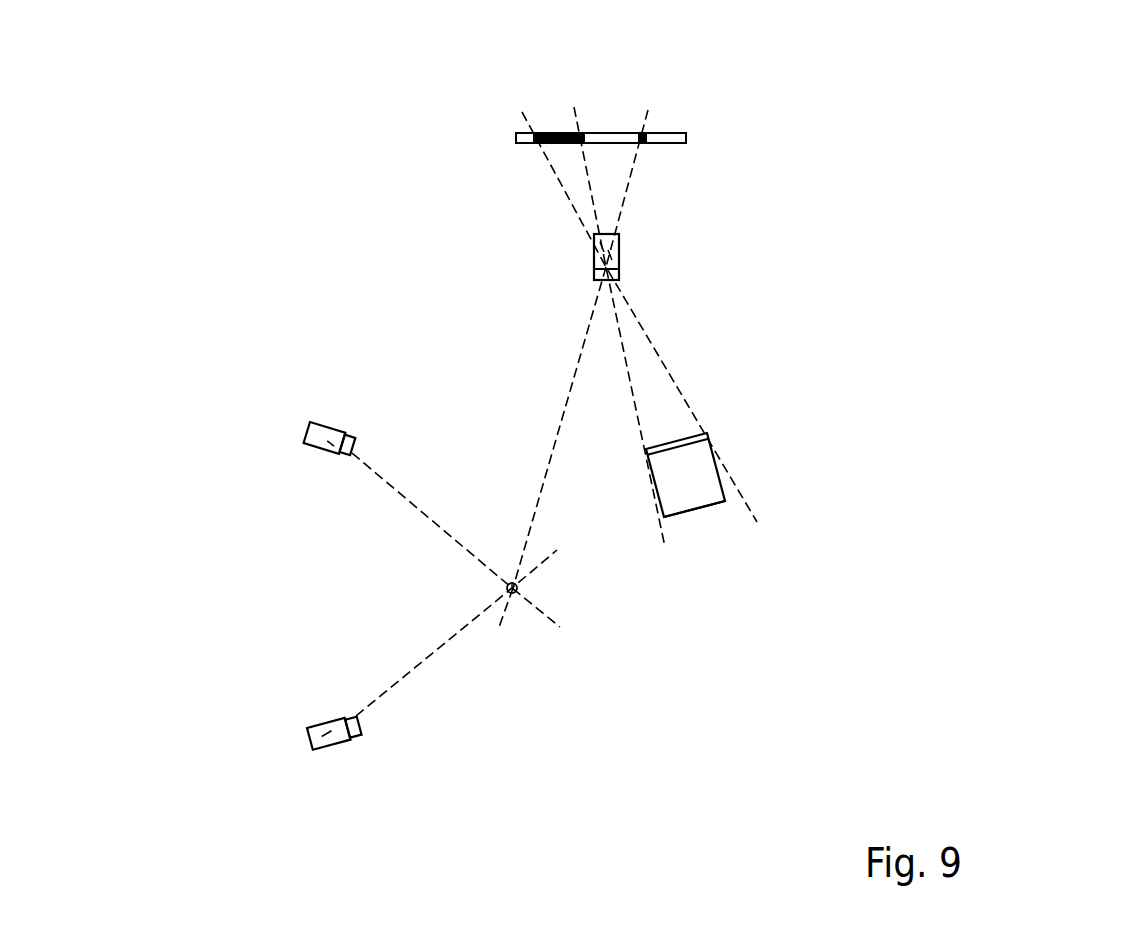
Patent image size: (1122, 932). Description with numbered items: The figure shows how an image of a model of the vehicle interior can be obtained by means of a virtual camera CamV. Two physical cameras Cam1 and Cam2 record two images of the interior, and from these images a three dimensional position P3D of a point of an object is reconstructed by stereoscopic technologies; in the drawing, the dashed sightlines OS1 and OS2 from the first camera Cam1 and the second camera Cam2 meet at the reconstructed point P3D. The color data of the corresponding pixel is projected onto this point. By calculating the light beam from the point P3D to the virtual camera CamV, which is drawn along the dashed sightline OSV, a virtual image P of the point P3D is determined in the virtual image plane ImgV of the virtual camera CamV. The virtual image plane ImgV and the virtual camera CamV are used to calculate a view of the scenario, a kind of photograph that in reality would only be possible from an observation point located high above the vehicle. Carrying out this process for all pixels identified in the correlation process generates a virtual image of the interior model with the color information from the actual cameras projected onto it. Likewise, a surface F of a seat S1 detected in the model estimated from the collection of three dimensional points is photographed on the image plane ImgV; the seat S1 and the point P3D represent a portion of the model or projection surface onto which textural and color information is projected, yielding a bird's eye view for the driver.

The virtual camera CamV is at (594, 257).
The virtual image plane ImgV is at (675, 132).
The virtual image of the point P is at (562, 398).
The surface of a seat F is at (690, 436).
The seat S1 is at (703, 508).
The first camera Cam1 is at (327, 453).
The second camera Cam2 is at (330, 750).
The optical sightline of virtual camera OSV is at (503, 620).
The three dimensional position of a point P3D is at (513, 593).
The optical sightline of first camera OS1 is at (546, 615).
The optical sightline of second camera OS2 is at (540, 565).